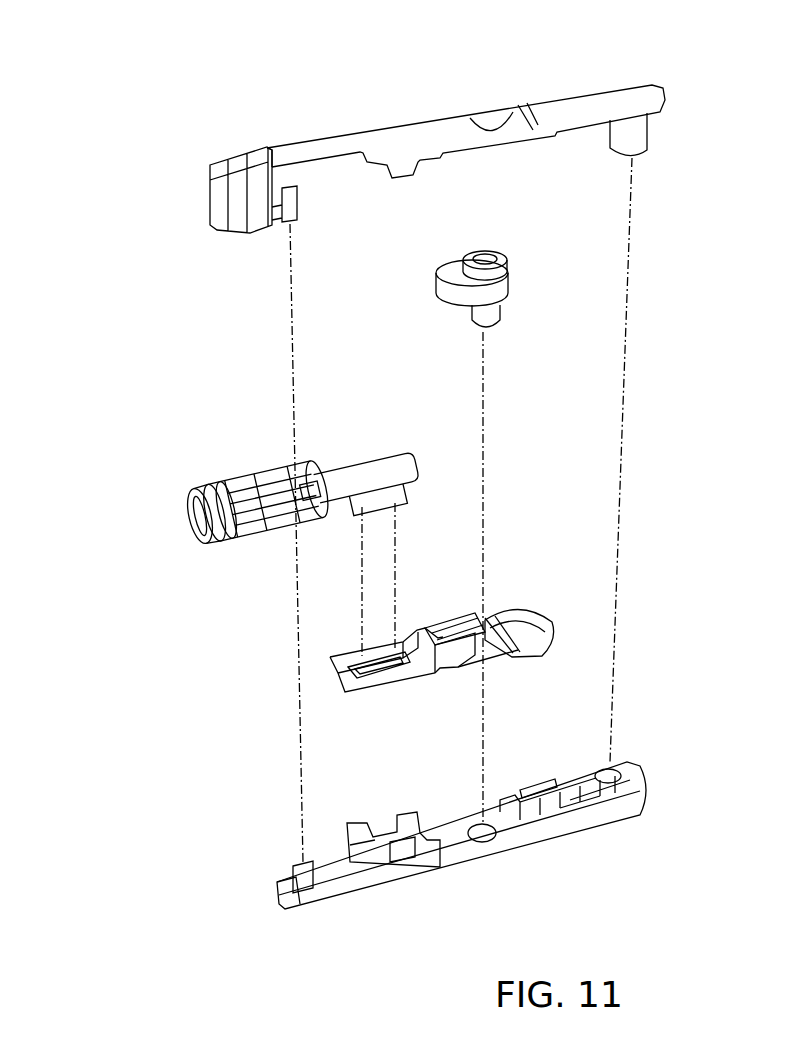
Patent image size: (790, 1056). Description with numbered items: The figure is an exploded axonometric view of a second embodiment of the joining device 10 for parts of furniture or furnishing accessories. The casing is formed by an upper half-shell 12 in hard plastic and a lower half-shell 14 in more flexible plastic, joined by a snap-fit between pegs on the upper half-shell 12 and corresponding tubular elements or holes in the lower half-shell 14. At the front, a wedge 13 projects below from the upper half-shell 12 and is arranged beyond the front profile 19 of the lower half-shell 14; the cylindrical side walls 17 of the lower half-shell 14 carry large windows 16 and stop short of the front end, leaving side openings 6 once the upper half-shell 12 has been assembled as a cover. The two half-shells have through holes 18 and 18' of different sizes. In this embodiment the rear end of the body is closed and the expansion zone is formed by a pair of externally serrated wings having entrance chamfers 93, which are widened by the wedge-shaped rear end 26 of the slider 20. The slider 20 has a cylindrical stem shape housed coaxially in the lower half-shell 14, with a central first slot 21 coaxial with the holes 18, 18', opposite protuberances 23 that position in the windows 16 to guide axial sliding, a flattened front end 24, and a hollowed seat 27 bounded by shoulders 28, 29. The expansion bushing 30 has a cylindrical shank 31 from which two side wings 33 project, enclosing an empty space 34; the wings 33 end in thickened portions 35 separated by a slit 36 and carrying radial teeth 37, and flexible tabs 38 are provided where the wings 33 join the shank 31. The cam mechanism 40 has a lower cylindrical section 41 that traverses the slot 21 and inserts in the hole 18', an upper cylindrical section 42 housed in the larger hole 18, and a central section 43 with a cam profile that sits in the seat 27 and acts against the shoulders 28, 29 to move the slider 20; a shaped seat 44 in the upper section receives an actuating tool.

The joining device 10 is at (132, 366).
The upper half-shell 12 is at (380, 123).
The wedge 13 is at (212, 222).
The lower half-shell 14 is at (452, 867).
The windows 16 is at (455, 870).
The side walls 17 is at (402, 876).
The through opening or hole 18 is at (500, 88).
The through opening or hole 18' is at (516, 862).
The front profile 19 is at (282, 907).
The slider 20 is at (506, 648).
The first slot 21 is at (470, 668).
The protuberances 23 is at (505, 665).
The flattened front end 24 is at (352, 692).
The wedge-shaped rear end 26 is at (526, 606).
The hollowed seat 27 is at (455, 626).
The shoulder 28 is at (527, 660).
The shoulder 29 is at (445, 630).
The expansion bushing 30 is at (248, 486).
The cylindrical shank 31 is at (320, 440).
The side wings 33 is at (273, 499).
The empty space 34 is at (272, 499).
The thickened portions 35 is at (212, 513).
The slit 36 is at (200, 515).
The teeth 37 is at (224, 510).
The flexible tabs 38 is at (313, 490).
The cam mechanism 40 is at (496, 270).
The lower cylindrical section 41 is at (502, 316).
The upper cylindrical section 42 is at (447, 277).
The central section with cam profile 43 is at (437, 300).
The shaped seat 44 is at (482, 255).
The side openings 6 is at (350, 852).
The entrance chamfers 93 is at (491, 790).